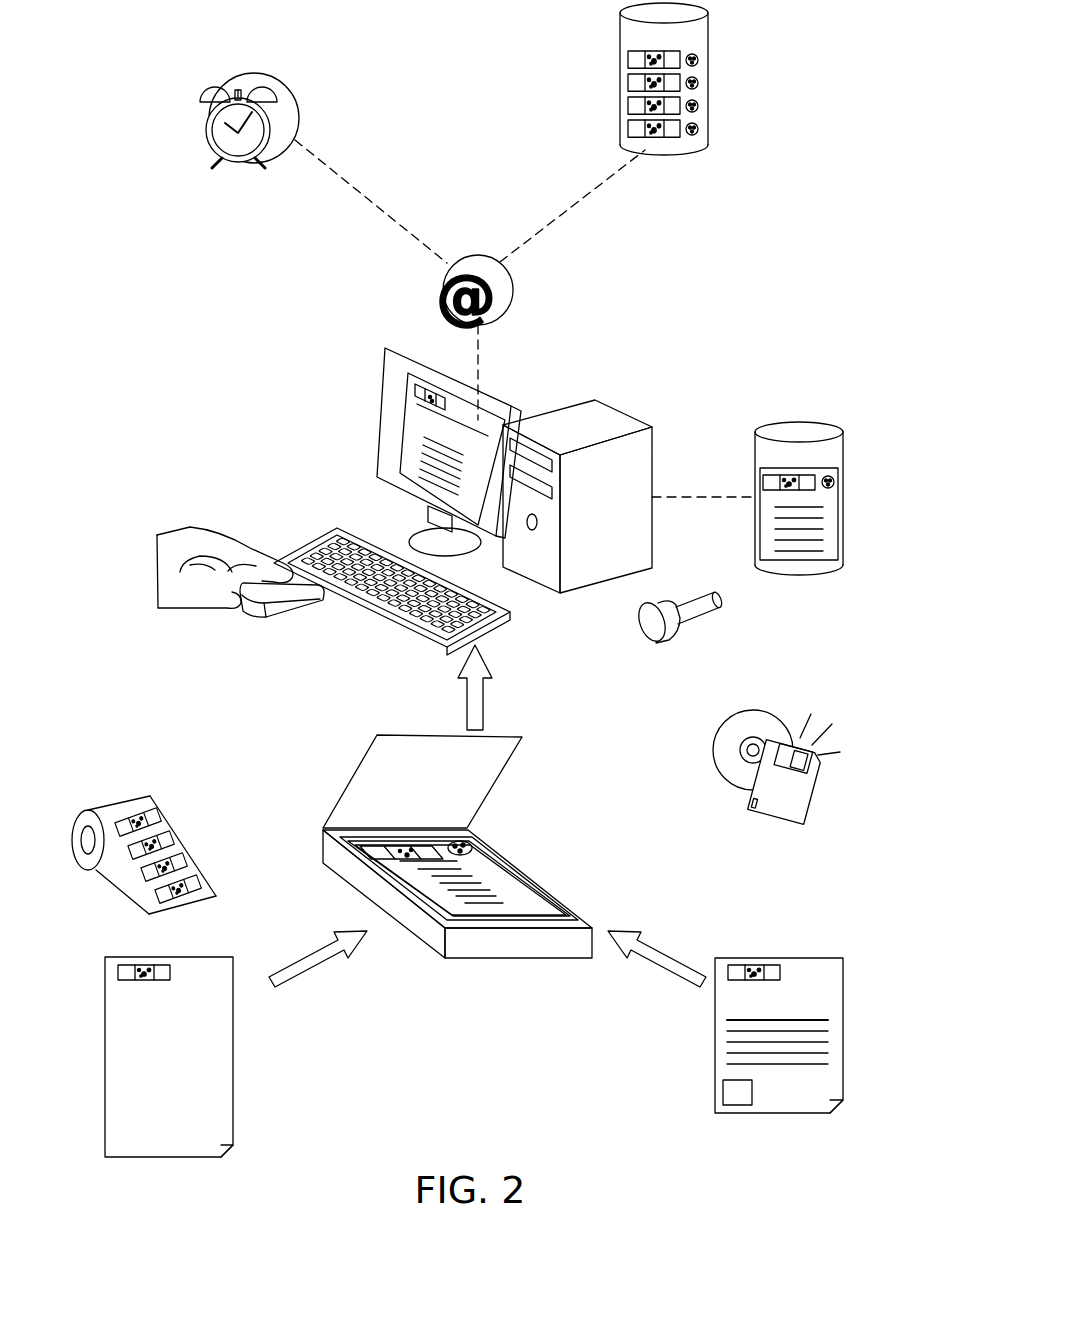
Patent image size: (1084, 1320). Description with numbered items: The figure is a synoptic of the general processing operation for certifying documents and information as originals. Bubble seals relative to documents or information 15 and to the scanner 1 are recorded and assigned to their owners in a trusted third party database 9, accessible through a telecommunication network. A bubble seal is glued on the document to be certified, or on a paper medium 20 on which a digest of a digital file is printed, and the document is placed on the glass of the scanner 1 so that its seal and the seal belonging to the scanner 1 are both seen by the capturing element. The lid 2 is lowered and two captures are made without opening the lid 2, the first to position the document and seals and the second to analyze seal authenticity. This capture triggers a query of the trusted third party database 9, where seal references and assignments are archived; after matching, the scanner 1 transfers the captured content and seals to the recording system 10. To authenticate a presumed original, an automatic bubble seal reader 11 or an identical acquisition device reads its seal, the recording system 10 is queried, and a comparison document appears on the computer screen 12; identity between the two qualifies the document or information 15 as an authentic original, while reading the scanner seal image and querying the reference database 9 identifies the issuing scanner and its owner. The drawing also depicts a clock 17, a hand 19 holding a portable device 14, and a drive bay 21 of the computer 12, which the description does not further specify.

The scanner 1 is at (437, 874).
The lid 2 is at (514, 758).
The trusted third party BD1 database 9 is at (663, 87).
The BD2 recording system 10 is at (818, 509).
The automatic bubble seal reader 11 is at (674, 636).
The computer screen 12 is at (603, 496).
The portable reader device 14 is at (296, 604).
The information 15 is at (812, 777).
The timestamp clock 17 is at (216, 86).
The user hand 19 is at (254, 555).
The paper medium 20 is at (804, 1015).
The drive bay 21 is at (538, 455).